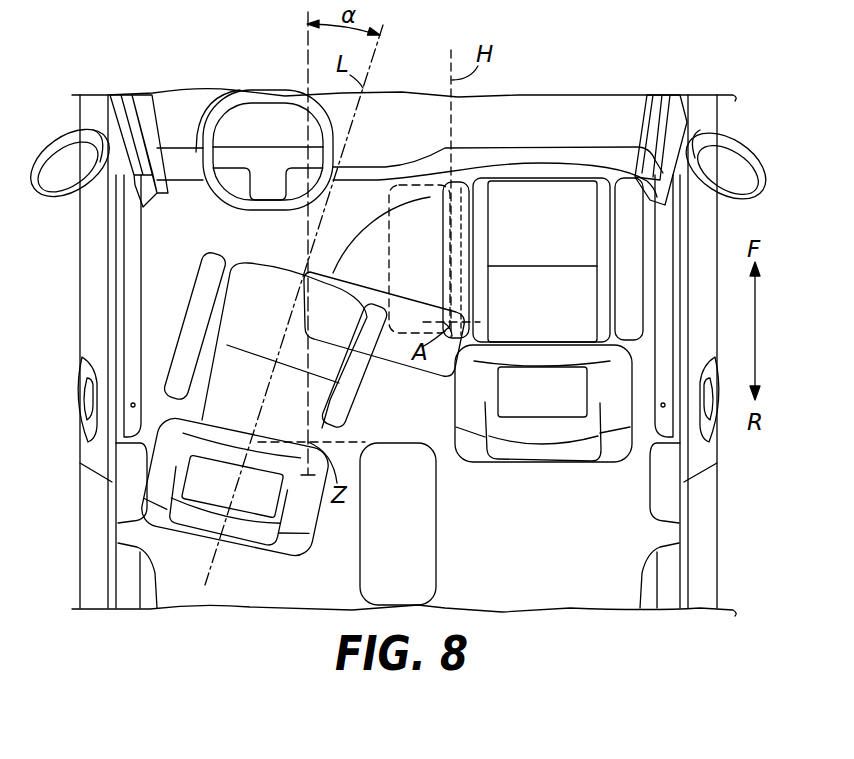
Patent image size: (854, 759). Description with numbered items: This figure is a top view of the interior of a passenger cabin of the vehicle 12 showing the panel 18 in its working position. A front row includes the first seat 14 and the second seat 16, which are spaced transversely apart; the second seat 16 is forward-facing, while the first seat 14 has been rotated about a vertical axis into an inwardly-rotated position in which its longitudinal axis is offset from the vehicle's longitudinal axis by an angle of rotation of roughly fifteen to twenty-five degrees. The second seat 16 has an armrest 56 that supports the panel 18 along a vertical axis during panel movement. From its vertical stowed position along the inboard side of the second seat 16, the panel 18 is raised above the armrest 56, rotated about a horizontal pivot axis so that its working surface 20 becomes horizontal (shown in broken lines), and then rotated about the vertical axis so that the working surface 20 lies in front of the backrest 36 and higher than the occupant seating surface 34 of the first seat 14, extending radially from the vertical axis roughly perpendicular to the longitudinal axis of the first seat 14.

The vehicle 12 is at (143, 72).
The first seat 14 is at (263, 424).
The second seat 16 is at (603, 462).
The panel 18 is at (327, 298).
The working surface 20 is at (370, 300).
The occupant seating surface 34 is at (275, 335).
The backrest 36 is at (163, 423).
The armrest 56 is at (462, 177).